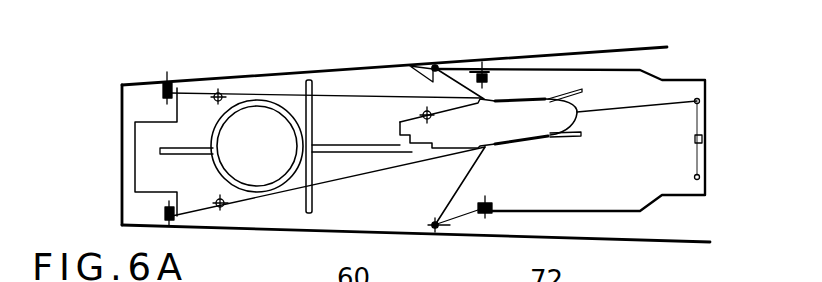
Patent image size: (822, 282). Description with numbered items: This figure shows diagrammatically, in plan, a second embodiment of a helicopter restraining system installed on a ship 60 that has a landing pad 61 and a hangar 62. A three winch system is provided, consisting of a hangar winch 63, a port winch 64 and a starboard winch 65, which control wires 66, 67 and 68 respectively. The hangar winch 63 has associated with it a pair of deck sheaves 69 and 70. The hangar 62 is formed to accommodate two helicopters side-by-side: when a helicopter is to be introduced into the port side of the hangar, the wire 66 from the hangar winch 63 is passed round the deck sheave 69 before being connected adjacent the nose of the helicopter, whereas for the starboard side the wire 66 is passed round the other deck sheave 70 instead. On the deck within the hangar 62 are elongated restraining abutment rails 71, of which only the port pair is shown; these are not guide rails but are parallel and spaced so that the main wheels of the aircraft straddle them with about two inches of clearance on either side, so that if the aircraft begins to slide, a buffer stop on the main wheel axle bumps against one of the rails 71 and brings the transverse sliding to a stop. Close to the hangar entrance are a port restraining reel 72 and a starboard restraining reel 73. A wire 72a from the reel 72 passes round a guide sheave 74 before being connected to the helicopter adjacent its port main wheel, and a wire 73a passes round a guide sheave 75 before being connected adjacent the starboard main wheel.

The ship 60 is at (291, 73).
The landing pad 61 is at (253, 117).
The hangar 62 is at (660, 75).
The hangar winch 63 is at (703, 138).
The port winch 64 is at (169, 83).
The starboard winch 65 is at (122, 209).
The control wire 66 is at (625, 108).
The control wire 67 is at (317, 95).
The control wire 68 is at (348, 180).
The deck sheave 69 is at (700, 97).
The deck sheave 70 is at (700, 179).
The elongated restraining abutment rails 71 is at (583, 92).
The port restraining reel 72 is at (487, 68).
The wire 72a is at (412, 65).
The starboard restraining reel 73 is at (485, 215).
The wire 73a is at (465, 183).
The guide sheave 74 is at (435, 64).
The guide sheave 75 is at (437, 230).